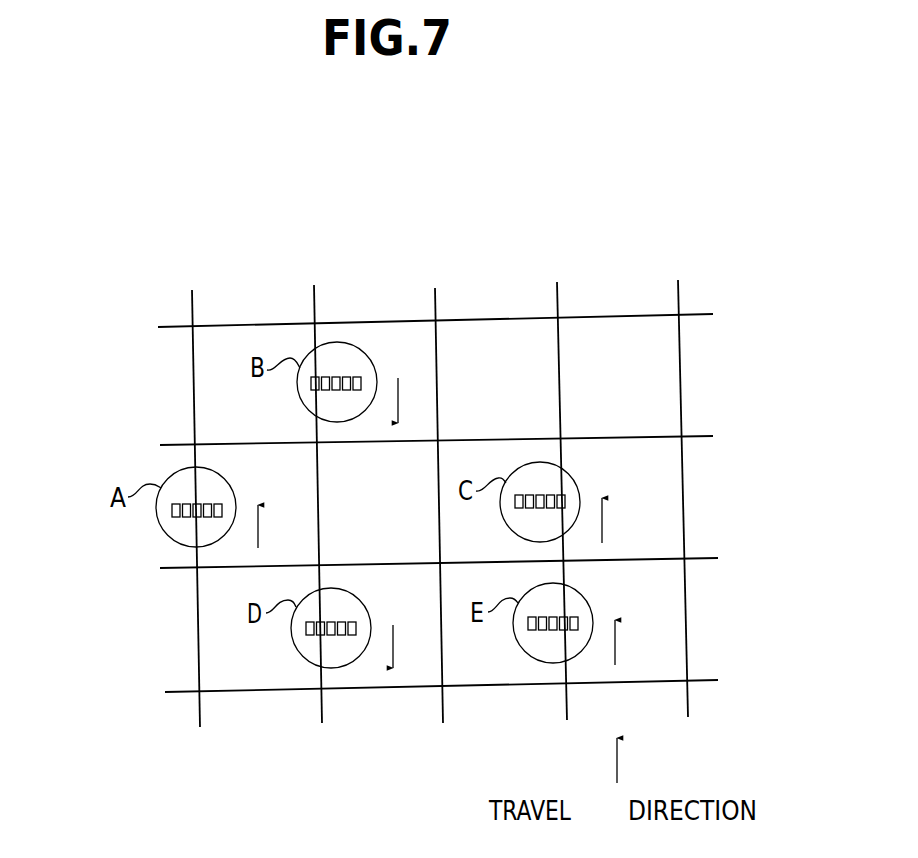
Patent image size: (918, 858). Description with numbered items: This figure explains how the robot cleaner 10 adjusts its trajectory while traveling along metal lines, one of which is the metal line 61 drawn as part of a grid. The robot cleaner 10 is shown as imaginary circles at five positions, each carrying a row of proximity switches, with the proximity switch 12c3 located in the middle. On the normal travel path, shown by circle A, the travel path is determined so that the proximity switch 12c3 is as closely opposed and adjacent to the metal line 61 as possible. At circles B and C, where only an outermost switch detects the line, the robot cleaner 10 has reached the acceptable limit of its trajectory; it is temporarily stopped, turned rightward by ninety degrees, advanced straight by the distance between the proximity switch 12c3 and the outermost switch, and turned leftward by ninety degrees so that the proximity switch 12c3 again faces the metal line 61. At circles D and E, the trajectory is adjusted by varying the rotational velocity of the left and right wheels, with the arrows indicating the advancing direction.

The robot cleaner 10 is at (372, 350).
The proximity switch 12c3 is at (336, 377).
The metal line 61 is at (200, 638).